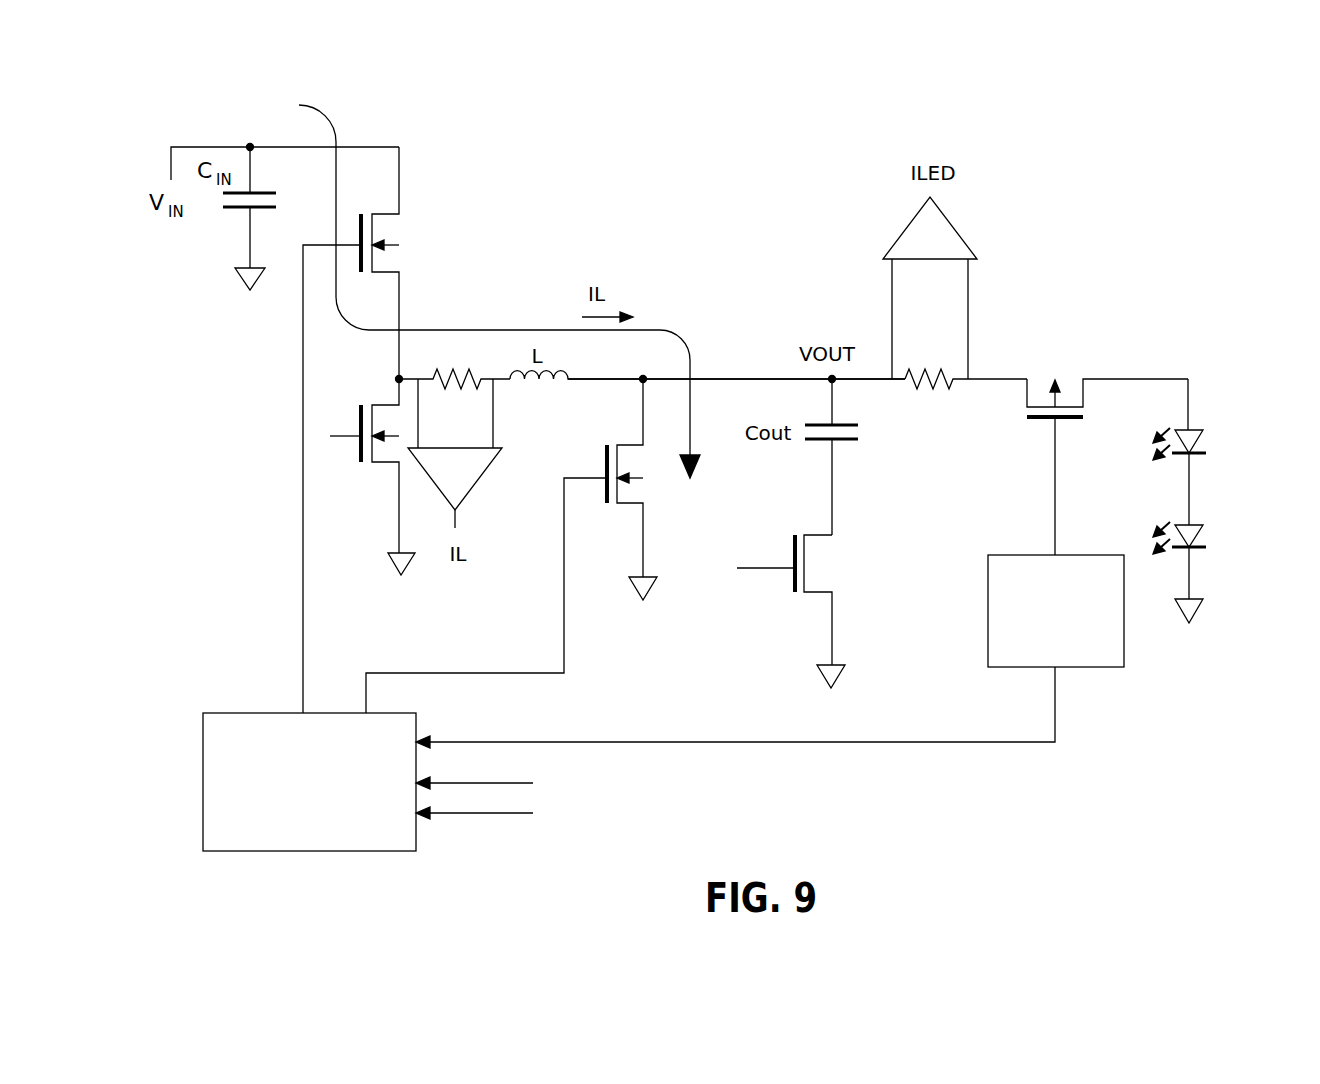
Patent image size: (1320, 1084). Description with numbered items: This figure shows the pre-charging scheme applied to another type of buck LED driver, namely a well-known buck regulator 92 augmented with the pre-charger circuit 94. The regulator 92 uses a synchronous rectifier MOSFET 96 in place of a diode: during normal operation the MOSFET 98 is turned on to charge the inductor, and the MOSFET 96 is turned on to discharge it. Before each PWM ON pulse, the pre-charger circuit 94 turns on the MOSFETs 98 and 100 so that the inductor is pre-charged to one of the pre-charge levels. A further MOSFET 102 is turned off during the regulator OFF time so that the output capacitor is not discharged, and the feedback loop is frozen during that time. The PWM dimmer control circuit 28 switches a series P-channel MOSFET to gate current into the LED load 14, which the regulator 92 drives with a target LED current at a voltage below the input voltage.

The MOSFET 98 is at (403, 228).
The synchronous rectifier MOSFET 96 is at (387, 463).
The MOSFET 100 is at (628, 505).
The MOSFET 102 is at (825, 550).
The buck regulator 92 is at (679, 274).
The PWM dimmer control circuit 28 is at (1083, 552).
The LED load 14 is at (1226, 488).
The pre-charger circuit 94 is at (228, 712).